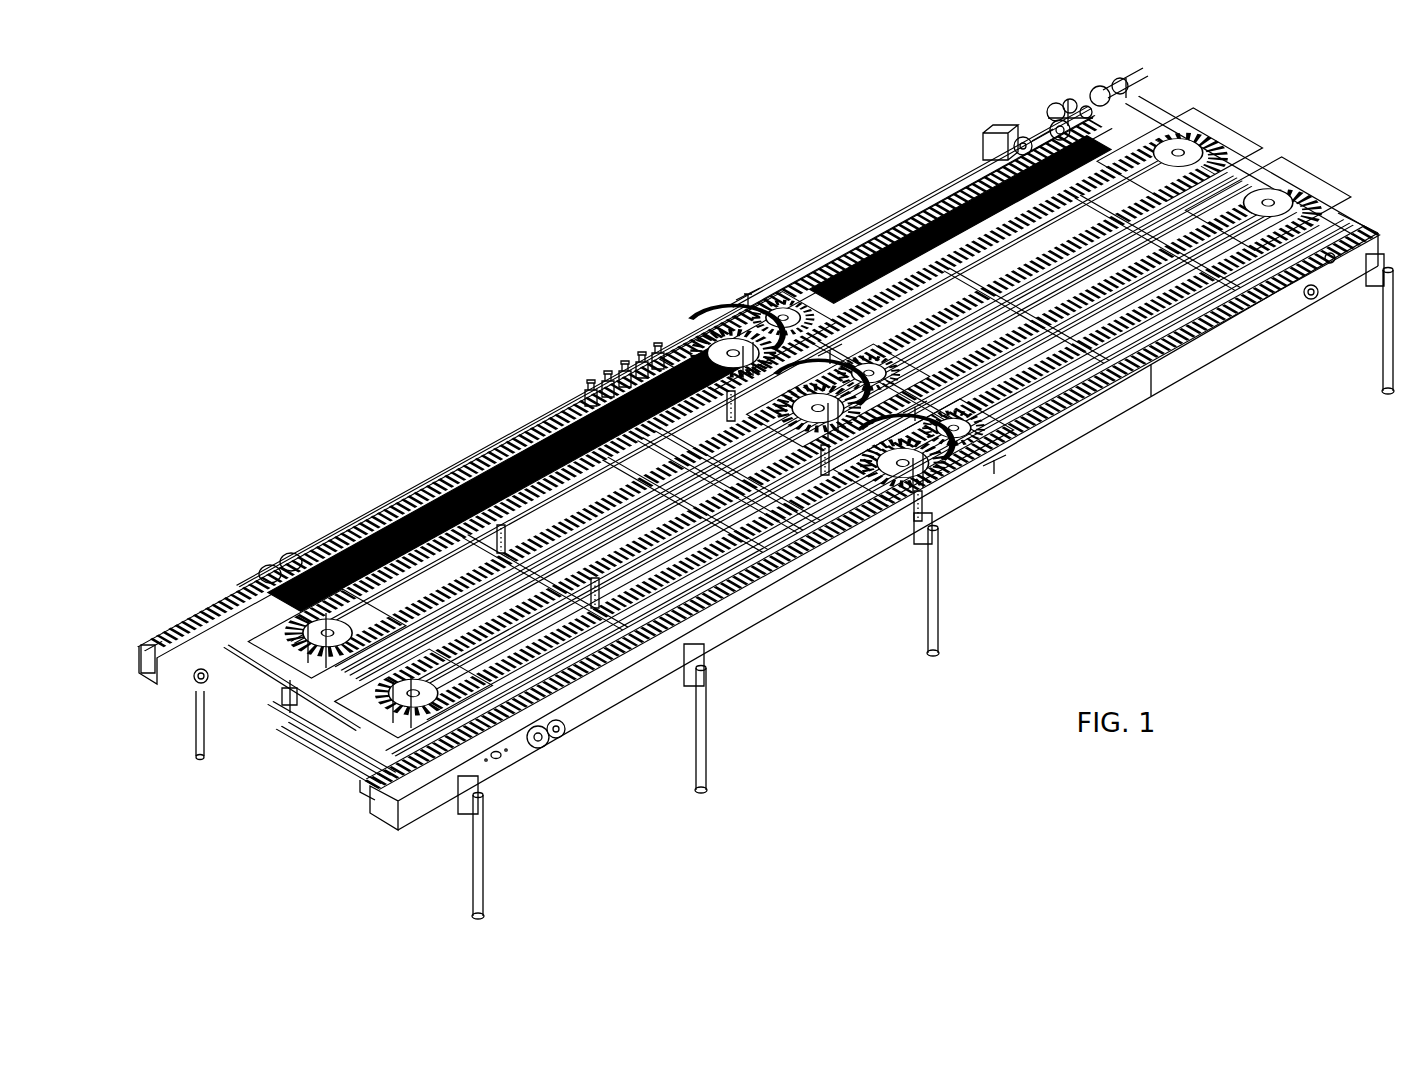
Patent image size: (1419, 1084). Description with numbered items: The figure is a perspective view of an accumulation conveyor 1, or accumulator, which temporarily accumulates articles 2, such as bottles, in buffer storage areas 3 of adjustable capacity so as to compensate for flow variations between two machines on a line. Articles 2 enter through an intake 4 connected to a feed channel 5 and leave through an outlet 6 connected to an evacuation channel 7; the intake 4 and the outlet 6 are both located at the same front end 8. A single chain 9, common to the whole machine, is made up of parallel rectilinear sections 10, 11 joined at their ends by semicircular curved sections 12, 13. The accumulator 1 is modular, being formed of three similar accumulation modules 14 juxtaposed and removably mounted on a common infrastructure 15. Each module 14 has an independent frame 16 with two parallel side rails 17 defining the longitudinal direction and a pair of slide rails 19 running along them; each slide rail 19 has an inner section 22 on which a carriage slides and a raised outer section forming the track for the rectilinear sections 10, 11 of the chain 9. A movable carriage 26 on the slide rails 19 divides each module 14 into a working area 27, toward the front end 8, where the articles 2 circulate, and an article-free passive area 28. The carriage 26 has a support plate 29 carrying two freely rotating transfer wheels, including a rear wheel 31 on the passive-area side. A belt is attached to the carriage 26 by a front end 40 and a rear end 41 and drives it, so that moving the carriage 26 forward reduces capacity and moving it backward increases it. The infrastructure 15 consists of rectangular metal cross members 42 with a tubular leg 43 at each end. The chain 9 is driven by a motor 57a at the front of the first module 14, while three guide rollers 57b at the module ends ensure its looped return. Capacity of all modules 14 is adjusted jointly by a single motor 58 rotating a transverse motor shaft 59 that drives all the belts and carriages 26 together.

The accumulation conveyor 1 is at (372, 400).
The articles 2 is at (576, 391).
The buffer storage areas 3 is at (484, 442).
The intake 4 is at (236, 584).
The feed channel 5 is at (214, 643).
The outlet 6 is at (470, 757).
The evacuation channel 7 is at (385, 762).
The front end 8 is at (303, 719).
The chain 9 is at (392, 499).
The rectilinear section 10 is at (452, 469).
The rectilinear section 11 is at (620, 655).
The curved section 12 is at (278, 690).
The curved section 13 is at (718, 322).
The accumulation module 14 is at (850, 229).
The common infrastructure 15 is at (305, 741).
The frame 16 is at (1066, 445).
The side rail 17 is at (1080, 409).
The slide rail 19 is at (792, 537).
The inner section 22 is at (836, 548).
The movable carriage 26 is at (726, 286).
The working area 27 is at (520, 419).
The passive area 28 is at (918, 209).
The support plate 29 is at (741, 289).
The rear wheel 31 is at (992, 441).
The front end of belt 40 is at (668, 337).
The rear end of belt 41 is at (800, 264).
The cross member 42 is at (345, 746).
The leg 43 is at (466, 831).
The motor 57a is at (181, 679).
The guide roller 57b is at (1080, 98).
The motor 58 is at (978, 119).
The motor shaft 59 is at (1138, 97).